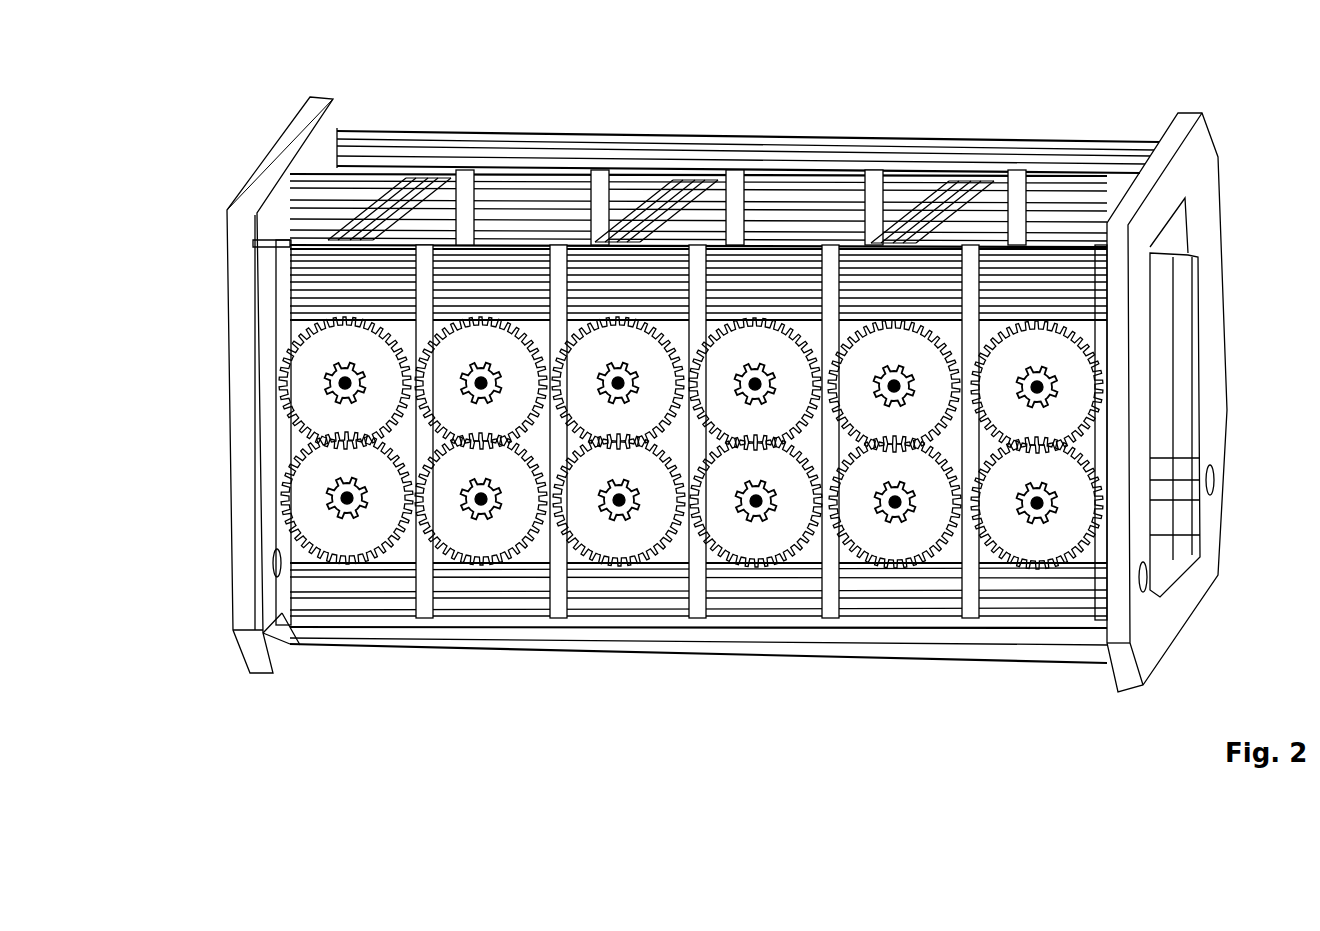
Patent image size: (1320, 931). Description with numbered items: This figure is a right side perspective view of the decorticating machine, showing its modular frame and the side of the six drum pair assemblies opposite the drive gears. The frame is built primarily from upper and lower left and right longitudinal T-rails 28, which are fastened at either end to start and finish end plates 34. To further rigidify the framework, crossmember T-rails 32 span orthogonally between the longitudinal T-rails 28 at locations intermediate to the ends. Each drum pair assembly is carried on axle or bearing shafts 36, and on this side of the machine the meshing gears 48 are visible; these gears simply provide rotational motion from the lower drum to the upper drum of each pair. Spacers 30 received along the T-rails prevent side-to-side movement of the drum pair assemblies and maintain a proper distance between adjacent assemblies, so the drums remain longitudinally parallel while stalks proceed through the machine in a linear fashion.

The longitudinal T-rails 28 is at (347, 283).
The spacers 30 is at (697, 600).
The crossmember T-rails 32 is at (383, 193).
The start and finish end plates 34 is at (313, 122).
The axle or bearing shafts 36 is at (348, 500).
The meshing gears 48 is at (313, 497).